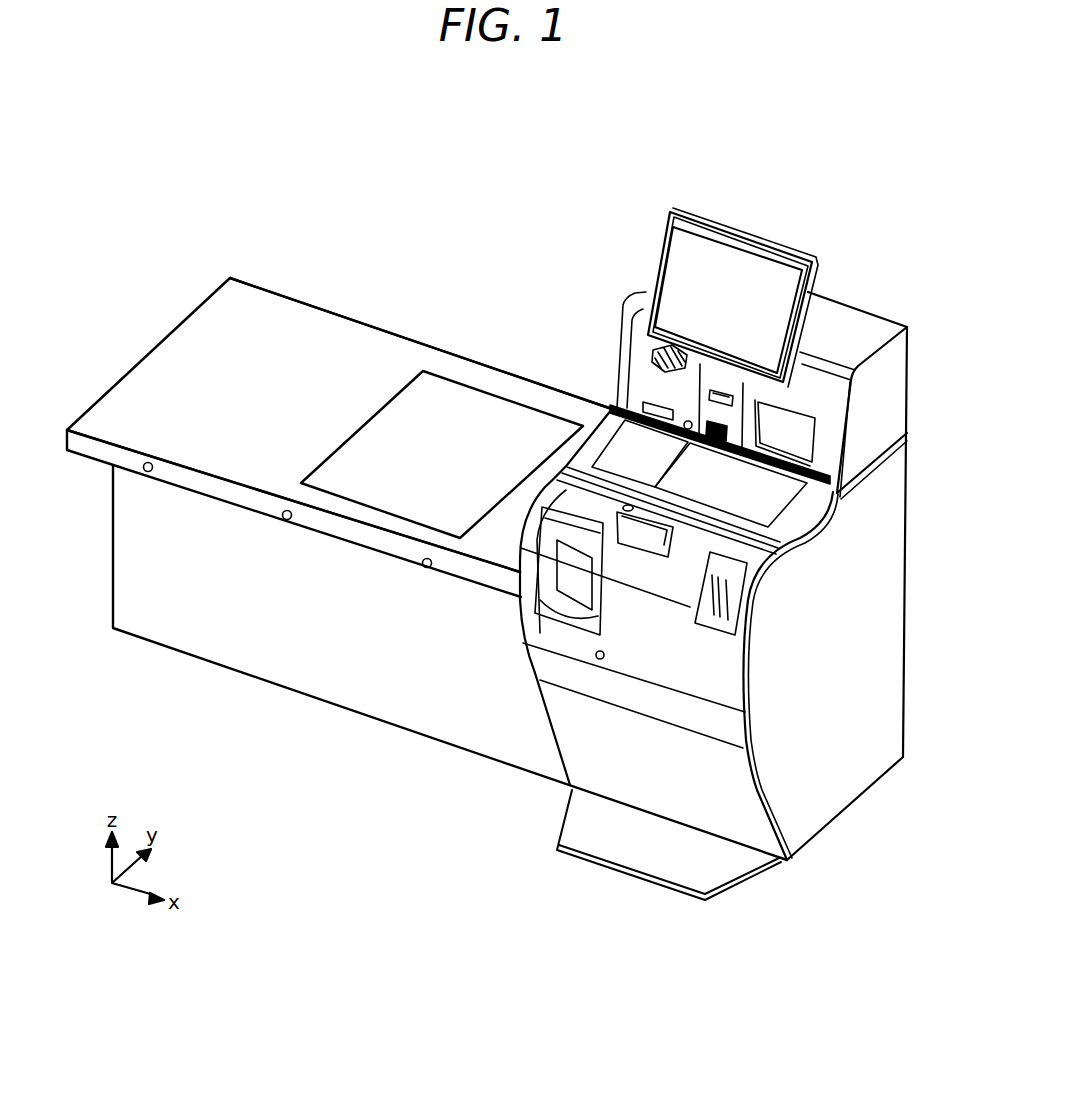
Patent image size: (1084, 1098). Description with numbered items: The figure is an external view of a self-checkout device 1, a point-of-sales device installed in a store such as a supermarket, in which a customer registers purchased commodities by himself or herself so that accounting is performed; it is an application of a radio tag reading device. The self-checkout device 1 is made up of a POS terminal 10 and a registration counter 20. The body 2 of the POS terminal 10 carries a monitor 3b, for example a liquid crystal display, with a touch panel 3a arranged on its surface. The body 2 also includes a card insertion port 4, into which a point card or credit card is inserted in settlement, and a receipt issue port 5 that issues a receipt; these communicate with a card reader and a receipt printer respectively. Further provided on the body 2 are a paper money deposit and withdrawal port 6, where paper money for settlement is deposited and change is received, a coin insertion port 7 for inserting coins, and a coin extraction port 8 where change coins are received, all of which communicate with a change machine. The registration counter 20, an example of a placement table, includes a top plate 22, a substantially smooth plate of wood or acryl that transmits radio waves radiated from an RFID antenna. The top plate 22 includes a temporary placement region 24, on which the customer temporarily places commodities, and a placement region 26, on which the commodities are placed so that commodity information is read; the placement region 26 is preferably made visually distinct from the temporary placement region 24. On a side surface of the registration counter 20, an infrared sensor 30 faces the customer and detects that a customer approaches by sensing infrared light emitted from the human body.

The self-checkout device 1 is at (680, 124).
The body 2 is at (810, 817).
The touch panel 3a is at (733, 276).
The monitor 3b is at (731, 268).
The card insertion port 4 is at (728, 386).
The receipt issue port 5 is at (662, 368).
The paper money deposit and withdrawal port 6 is at (713, 622).
The coin insertion port 7 is at (638, 532).
The coin extraction port 8 is at (577, 612).
The POS terminal 10 is at (891, 297).
The registration counter 20 is at (426, 274).
The top plate 22 is at (243, 308).
The temporary placement region 24 is at (352, 372).
The placement region 26 is at (452, 407).
The infrared sensor 30 is at (144, 469).